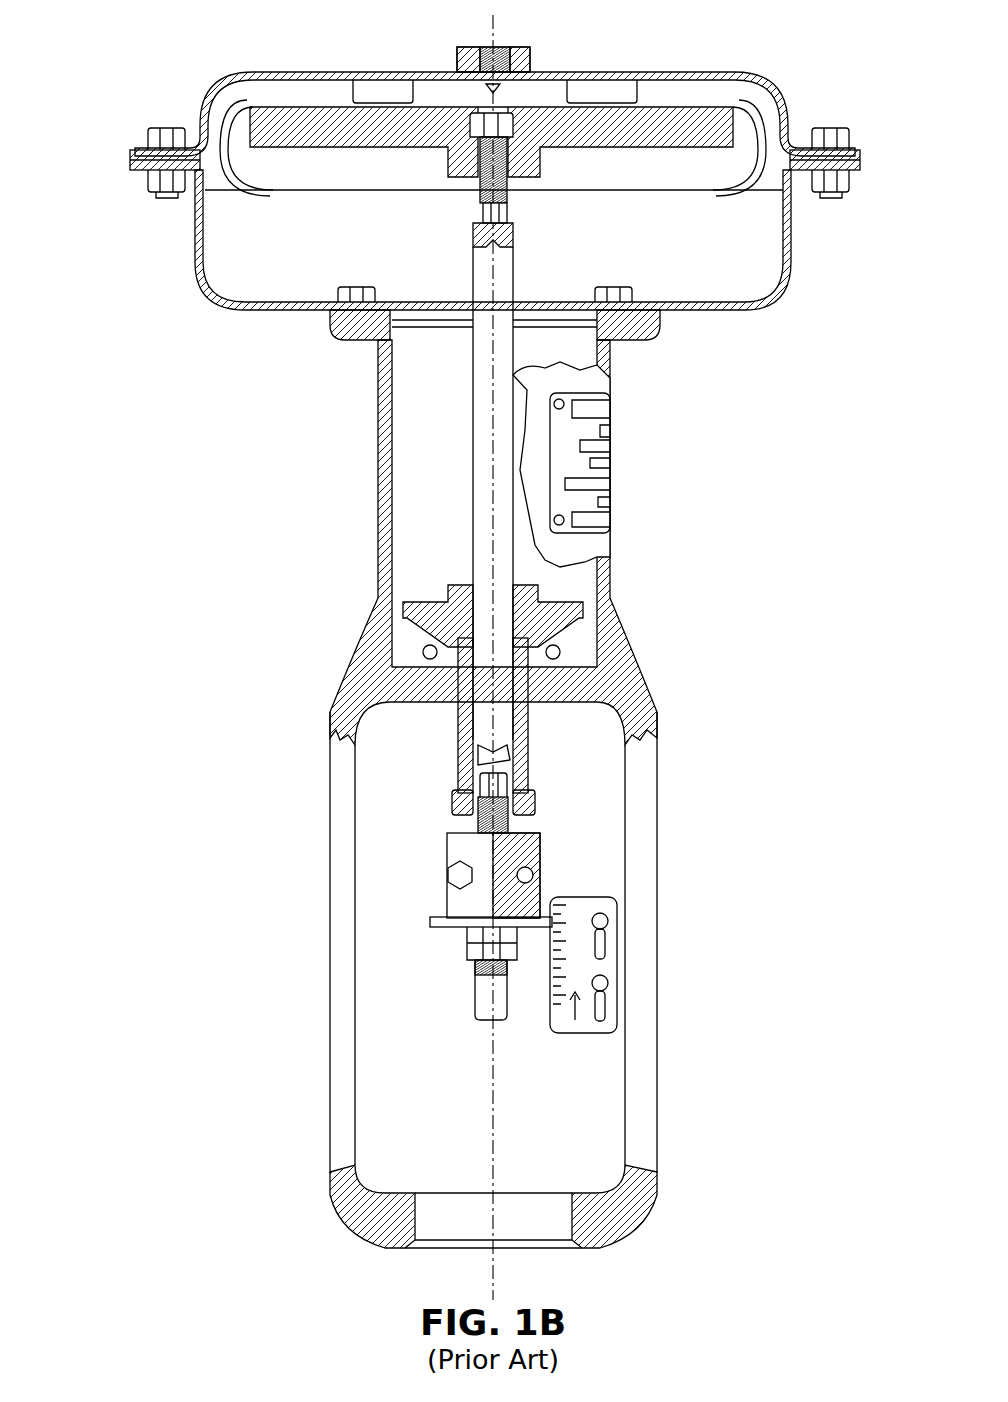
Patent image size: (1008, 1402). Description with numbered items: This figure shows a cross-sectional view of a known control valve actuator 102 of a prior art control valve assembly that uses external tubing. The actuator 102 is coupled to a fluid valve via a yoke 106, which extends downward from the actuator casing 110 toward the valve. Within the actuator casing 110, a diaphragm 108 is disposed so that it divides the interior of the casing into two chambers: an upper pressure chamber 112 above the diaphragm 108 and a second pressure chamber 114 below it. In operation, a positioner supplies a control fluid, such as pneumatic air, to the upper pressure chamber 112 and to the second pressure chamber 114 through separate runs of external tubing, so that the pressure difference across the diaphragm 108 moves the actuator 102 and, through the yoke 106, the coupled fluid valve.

The actuator 102 is at (147, 53).
The yoke 106 is at (355, 663).
The diaphragm 108 is at (273, 192).
The actuator casing 110 is at (222, 292).
The upper pressure chamber 112 is at (722, 92).
The second pressure chamber 114 is at (707, 237).